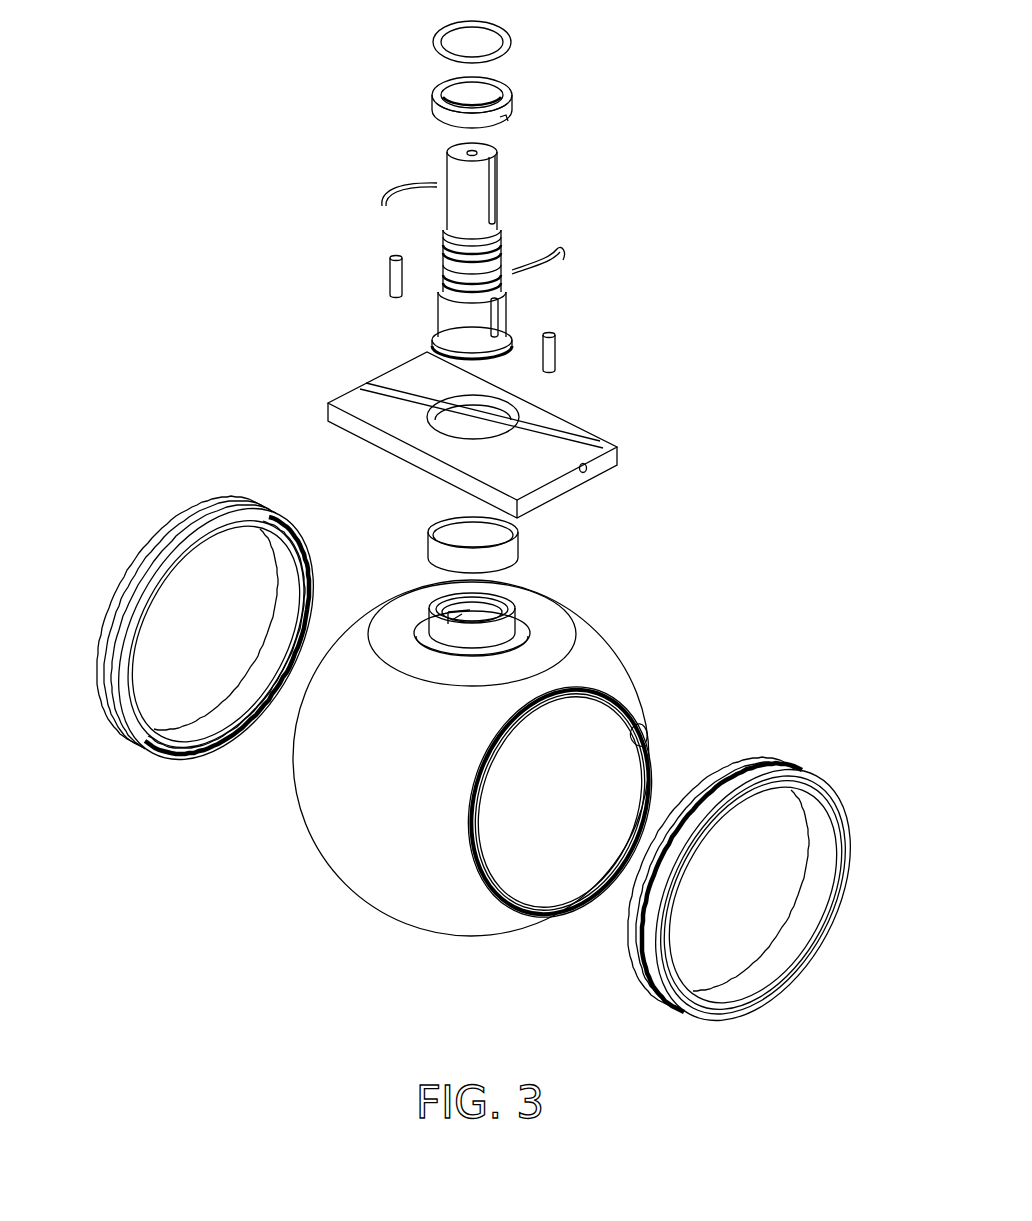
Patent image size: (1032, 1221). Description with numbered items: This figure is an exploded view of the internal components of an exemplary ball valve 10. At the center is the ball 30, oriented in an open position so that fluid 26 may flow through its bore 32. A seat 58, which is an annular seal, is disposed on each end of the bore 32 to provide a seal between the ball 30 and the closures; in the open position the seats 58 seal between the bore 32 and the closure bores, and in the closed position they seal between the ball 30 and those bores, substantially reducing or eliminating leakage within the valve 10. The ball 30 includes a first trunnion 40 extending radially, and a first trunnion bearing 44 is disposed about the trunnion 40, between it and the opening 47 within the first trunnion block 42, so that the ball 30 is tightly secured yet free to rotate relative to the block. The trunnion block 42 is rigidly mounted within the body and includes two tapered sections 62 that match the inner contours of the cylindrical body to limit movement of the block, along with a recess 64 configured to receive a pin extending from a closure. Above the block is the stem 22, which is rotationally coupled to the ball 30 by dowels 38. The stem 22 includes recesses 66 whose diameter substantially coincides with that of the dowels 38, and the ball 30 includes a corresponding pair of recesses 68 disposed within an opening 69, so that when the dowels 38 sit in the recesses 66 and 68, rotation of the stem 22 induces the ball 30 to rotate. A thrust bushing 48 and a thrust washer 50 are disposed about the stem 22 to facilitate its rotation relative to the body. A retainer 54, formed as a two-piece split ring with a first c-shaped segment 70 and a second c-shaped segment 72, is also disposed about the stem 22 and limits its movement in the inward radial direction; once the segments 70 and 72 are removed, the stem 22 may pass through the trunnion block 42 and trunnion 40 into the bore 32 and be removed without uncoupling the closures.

The ball valve 10 is at (241, 388).
The stem 22 is at (500, 188).
The fluid 26 is at (92, 564).
The ball 30 is at (598, 652).
The bore 32 is at (640, 745).
The dowels 38 is at (388, 276).
The first trunnion 40 is at (436, 612).
The first trunnion block 42 is at (551, 488).
The first trunnion bearing 44 is at (433, 551).
The opening 47 is at (449, 412).
The thrust bushing 48 is at (511, 98).
The thrust washer 50 is at (508, 45).
The retainer 54 is at (556, 203).
The seat 58 is at (187, 515).
The tapered sections 62 is at (594, 442).
The recess 64 is at (585, 470).
The recesses 66 is at (499, 316).
The recesses 68 is at (489, 613).
The opening 69 is at (488, 610).
The first c-shaped segment 70 is at (404, 183).
The second c-shaped segment 72 is at (565, 262).